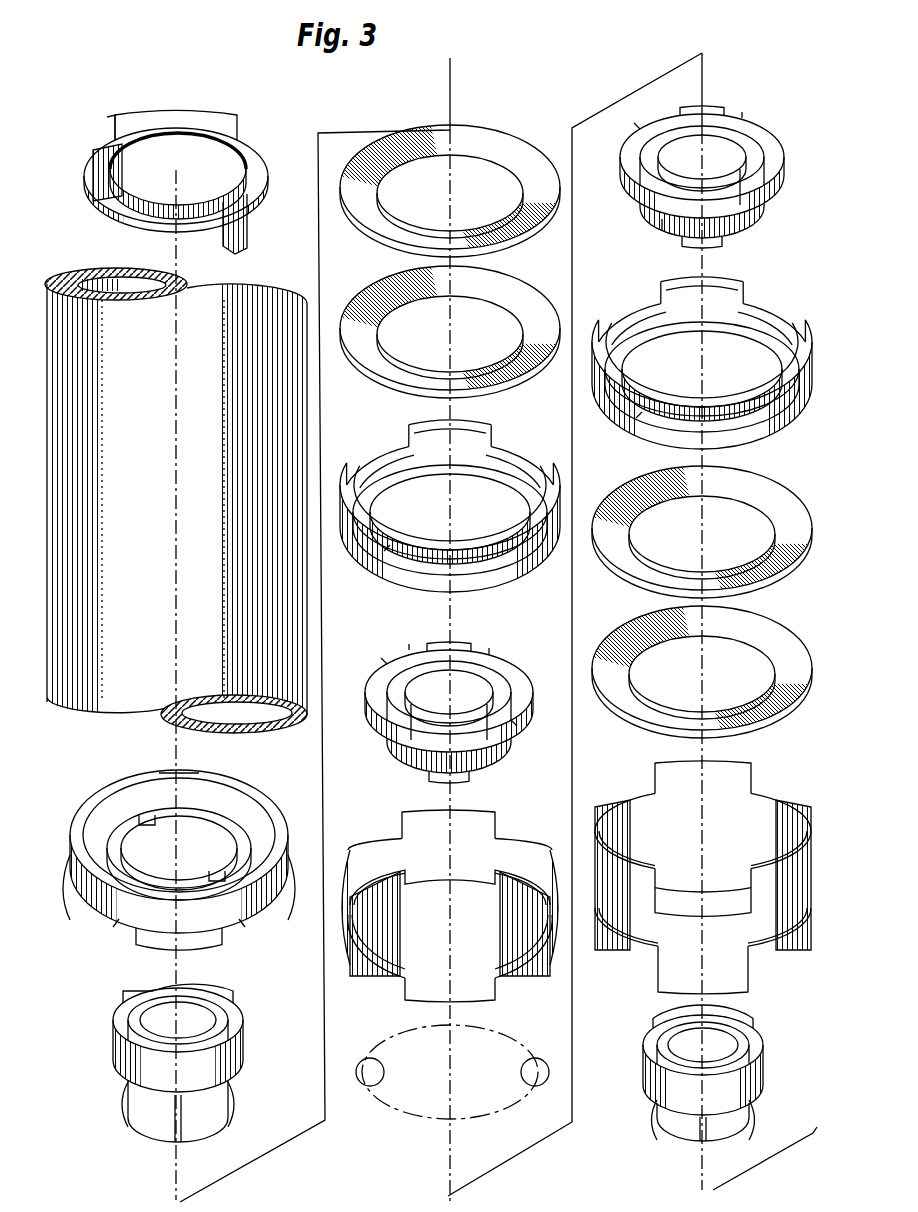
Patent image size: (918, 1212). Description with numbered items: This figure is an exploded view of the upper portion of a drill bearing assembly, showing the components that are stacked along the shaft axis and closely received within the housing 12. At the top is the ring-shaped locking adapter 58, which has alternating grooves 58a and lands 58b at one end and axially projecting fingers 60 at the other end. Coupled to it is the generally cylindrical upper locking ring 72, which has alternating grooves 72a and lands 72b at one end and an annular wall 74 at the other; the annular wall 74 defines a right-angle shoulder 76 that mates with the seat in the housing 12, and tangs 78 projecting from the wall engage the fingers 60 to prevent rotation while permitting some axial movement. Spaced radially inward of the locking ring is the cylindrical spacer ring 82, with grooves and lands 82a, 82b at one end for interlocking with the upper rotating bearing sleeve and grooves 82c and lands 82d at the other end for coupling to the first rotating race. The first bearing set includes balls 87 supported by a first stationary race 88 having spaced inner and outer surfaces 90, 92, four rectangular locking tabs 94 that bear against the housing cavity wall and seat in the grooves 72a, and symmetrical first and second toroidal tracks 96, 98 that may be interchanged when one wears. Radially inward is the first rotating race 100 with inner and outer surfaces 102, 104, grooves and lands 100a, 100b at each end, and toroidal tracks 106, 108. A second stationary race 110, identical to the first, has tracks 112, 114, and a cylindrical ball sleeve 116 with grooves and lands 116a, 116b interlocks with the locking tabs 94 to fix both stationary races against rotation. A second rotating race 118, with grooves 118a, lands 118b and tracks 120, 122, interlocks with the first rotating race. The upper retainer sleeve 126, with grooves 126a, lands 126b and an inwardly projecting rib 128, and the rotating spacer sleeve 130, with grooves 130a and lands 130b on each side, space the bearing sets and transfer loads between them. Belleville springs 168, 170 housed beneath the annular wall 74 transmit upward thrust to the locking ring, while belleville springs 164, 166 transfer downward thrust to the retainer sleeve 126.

The housing 12 is at (192, 513).
The locking adapter 58 is at (174, 169).
The grooves 58a is at (87, 119).
The lands 58b is at (188, 112).
The fingers 60 is at (166, 199).
The upper locking ring 72 is at (189, 855).
The grooves 72a is at (201, 880).
The lands 72b is at (154, 911).
The annular wall 74 is at (179, 848).
The right-angle shoulder 76 is at (224, 778).
The tangs 78 is at (170, 809).
The spacer ring 82 is at (174, 1074).
The grooves 82a is at (220, 996).
The lands 82b is at (107, 1003).
The grooves 82c is at (203, 1109).
The lands 82d is at (201, 1131).
The balls 87 is at (370, 1058).
The first stationary race 88 is at (450, 504).
The inner surface 90 is at (450, 538).
The outer surface 92 is at (392, 442).
The locking tabs 94 is at (392, 442).
The first toroidal track 96 is at (374, 576).
The second toroidal track 98 is at (450, 519).
The first rotating race 100 is at (452, 700).
The grooves 100a is at (460, 696).
The lands 100b is at (455, 700).
The inner surface 102 is at (409, 747).
The outer surface 104 is at (515, 644).
The first toroidal track 106 is at (530, 722).
The second toroidal track 108 is at (390, 638).
The second stationary race 110 is at (702, 354).
The first toroidal track 112 is at (631, 433).
The second toroidal track 114 is at (702, 377).
The ball sleeve 116 is at (453, 901).
The grooves 116a is at (390, 837).
The lands 116b is at (428, 884).
The second rotating race 118 is at (685, 154).
The grooves 118a is at (639, 187).
The lands 118b is at (728, 166).
The first toroidal track 120 is at (753, 207).
The second toroidal track 122 is at (768, 115).
The upper retainer sleeve 126 is at (698, 860).
The grooves 126a is at (612, 805).
The lands 126b is at (668, 765).
The rib 128 is at (726, 900).
The rotating spacer sleeve 130 is at (700, 1082).
The grooves 130a is at (698, 1098).
The lands 130b is at (692, 1079).
The belleville spring 164 is at (702, 517).
The belleville spring 166 is at (702, 662).
The belleville spring 168 is at (450, 176).
The belleville spring 170 is at (450, 322).